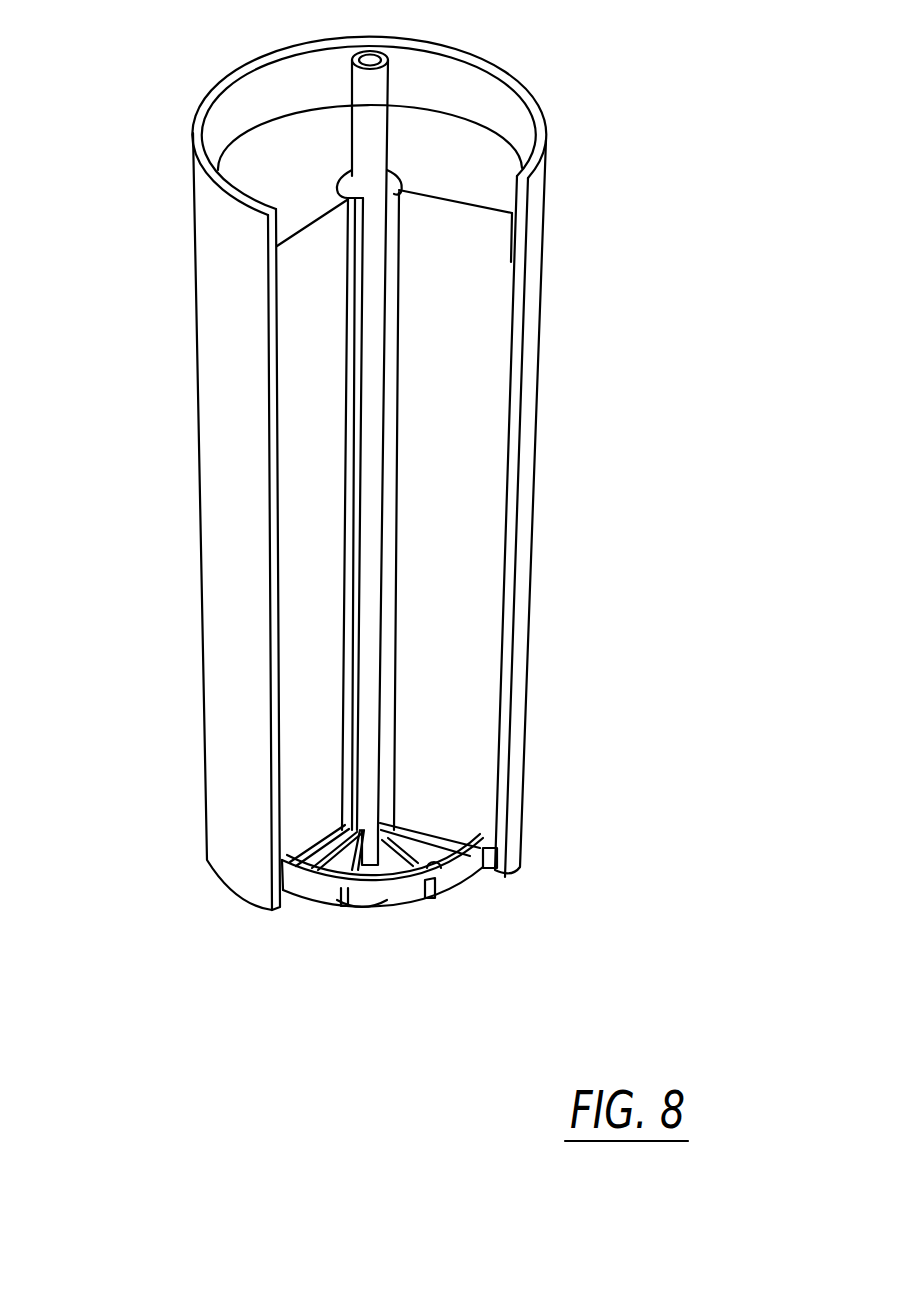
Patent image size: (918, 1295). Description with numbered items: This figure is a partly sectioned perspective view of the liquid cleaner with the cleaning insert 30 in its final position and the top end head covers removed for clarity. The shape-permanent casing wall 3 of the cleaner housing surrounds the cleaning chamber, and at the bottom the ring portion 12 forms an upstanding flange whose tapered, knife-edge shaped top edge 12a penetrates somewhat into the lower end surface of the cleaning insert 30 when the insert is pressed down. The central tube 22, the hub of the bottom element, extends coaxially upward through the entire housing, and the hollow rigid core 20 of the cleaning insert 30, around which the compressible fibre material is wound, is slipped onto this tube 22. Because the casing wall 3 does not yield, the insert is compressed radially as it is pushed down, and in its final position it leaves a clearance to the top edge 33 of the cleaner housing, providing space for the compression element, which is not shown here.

The casing wall 3 is at (518, 593).
The ring portion 12 is at (407, 888).
The top edge of the ring portion 12a is at (437, 873).
The core 20 is at (392, 355).
The central tube 22 is at (377, 115).
The cleaning insert 30 is at (463, 460).
The top edge of the cleaner housing 33 is at (238, 77).